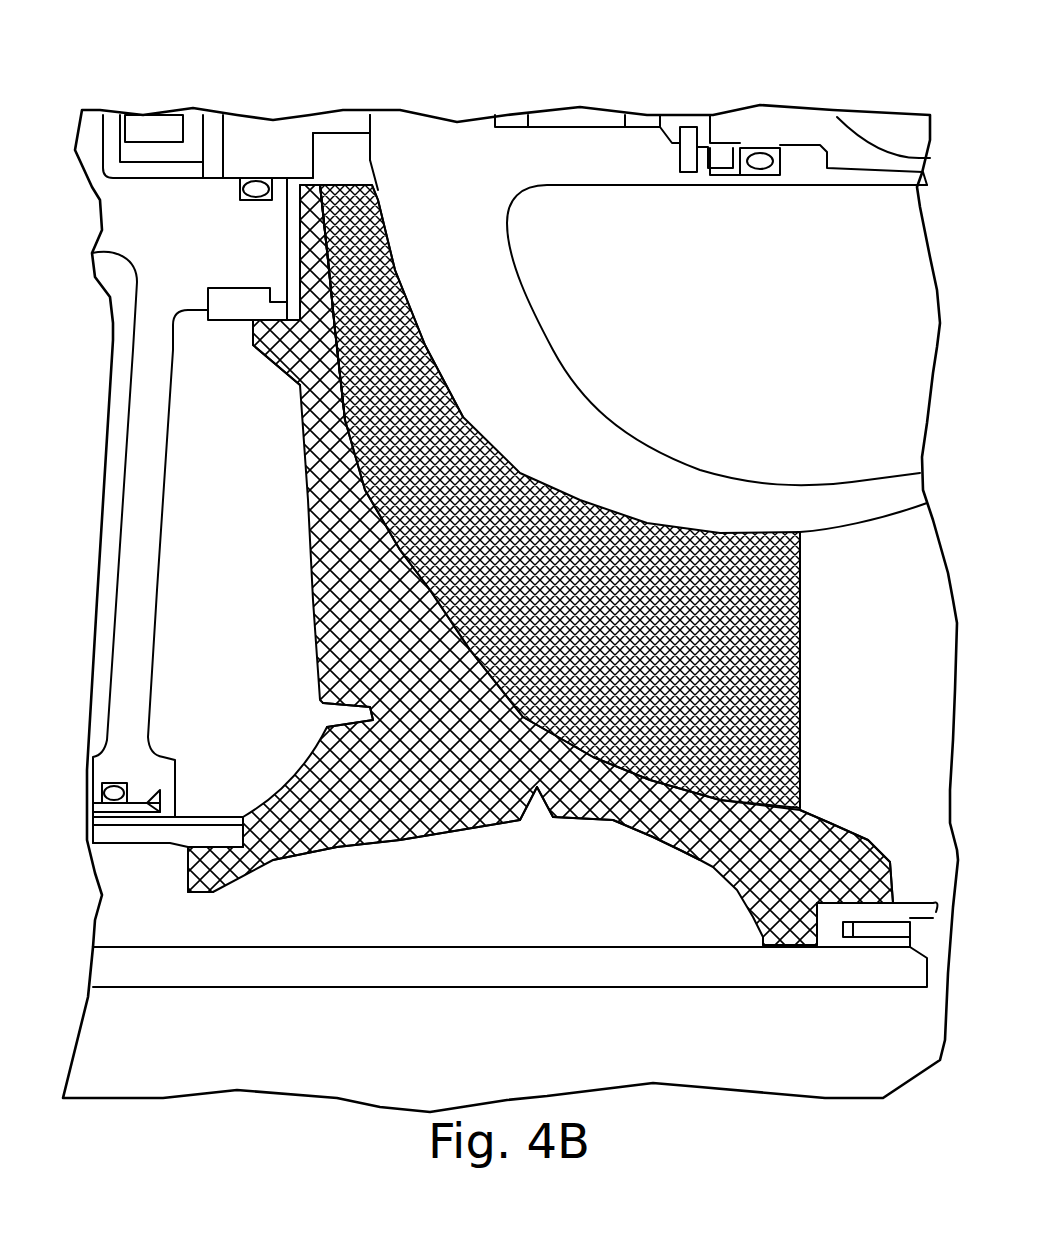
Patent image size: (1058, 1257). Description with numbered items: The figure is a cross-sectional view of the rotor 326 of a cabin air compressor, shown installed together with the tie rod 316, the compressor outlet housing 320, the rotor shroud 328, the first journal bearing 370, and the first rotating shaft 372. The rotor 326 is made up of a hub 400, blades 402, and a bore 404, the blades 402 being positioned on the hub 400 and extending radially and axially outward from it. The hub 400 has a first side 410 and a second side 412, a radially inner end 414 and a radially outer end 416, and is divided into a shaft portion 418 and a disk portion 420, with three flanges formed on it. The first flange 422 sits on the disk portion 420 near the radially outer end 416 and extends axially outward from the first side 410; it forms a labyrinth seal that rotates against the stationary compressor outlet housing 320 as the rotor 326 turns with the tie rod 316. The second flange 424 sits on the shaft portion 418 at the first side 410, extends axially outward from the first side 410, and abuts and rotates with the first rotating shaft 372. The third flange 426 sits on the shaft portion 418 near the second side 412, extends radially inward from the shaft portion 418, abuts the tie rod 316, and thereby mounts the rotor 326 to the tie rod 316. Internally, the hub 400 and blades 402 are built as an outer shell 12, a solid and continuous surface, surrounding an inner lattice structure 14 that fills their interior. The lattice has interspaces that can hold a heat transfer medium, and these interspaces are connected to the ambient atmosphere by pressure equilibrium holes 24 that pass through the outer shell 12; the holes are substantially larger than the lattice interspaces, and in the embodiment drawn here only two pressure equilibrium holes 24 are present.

The outer shell 12 is at (802, 638).
The inner lattice structure 14 is at (405, 818).
The pressure equilibrium holes 24 is at (330, 715).
The tie rod 316 is at (865, 965).
The compressor outlet housing 320 is at (150, 240).
The rotor 326 is at (874, 619).
The rotor shroud 328 is at (452, 193).
The first journal bearing 370 is at (127, 807).
The first rotating shaft 372 is at (133, 845).
The hub 400 is at (327, 478).
The blades 402 is at (802, 590).
The bore 404 is at (557, 900).
The first side 410 is at (278, 607).
The second side 412 is at (875, 817).
The radially inner end 414 is at (707, 962).
The radially outer end 416 is at (348, 165).
The shaft portion 418 is at (668, 825).
The disk portion 420 is at (323, 432).
The first flange 422 is at (253, 327).
The second flange 424 is at (213, 888).
The third flange 426 is at (792, 947).